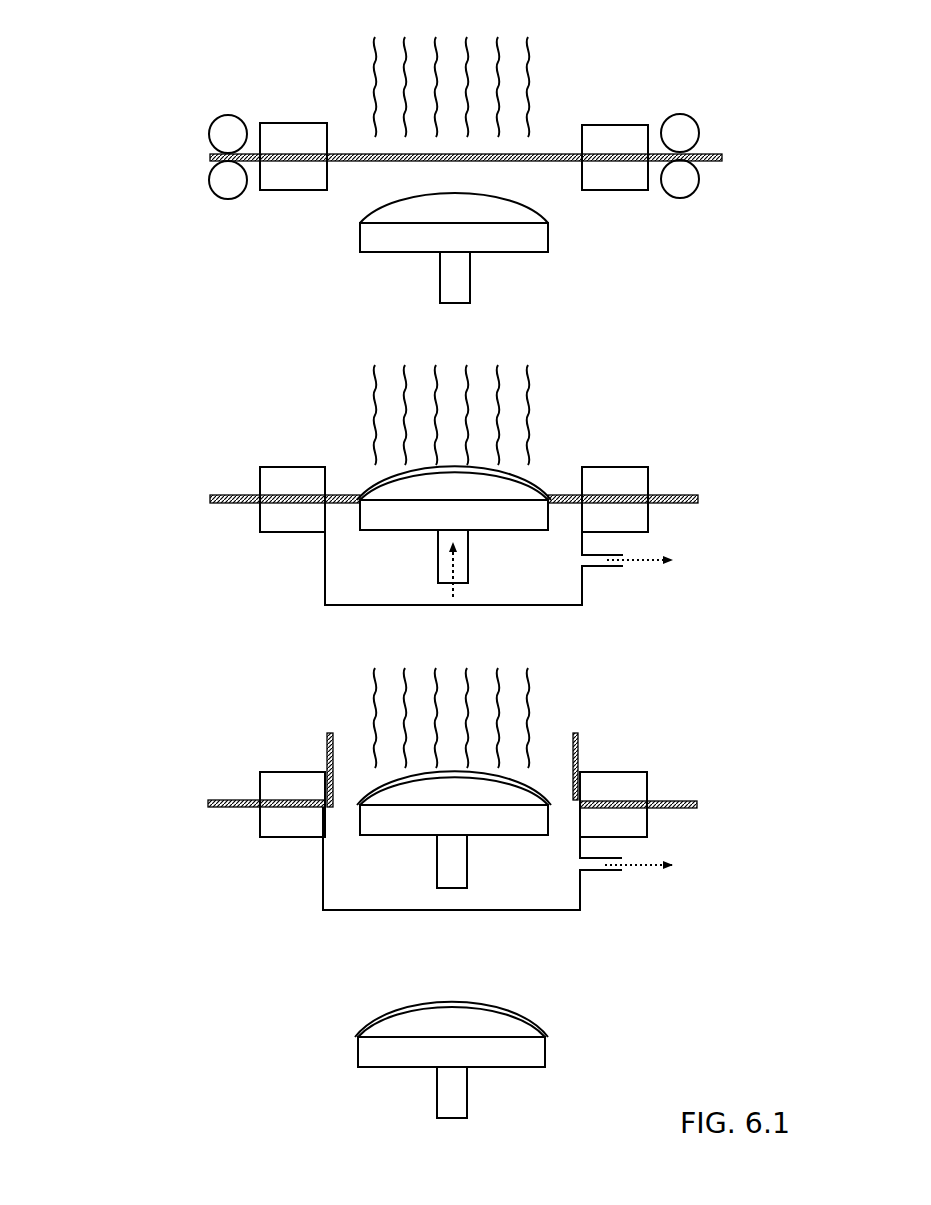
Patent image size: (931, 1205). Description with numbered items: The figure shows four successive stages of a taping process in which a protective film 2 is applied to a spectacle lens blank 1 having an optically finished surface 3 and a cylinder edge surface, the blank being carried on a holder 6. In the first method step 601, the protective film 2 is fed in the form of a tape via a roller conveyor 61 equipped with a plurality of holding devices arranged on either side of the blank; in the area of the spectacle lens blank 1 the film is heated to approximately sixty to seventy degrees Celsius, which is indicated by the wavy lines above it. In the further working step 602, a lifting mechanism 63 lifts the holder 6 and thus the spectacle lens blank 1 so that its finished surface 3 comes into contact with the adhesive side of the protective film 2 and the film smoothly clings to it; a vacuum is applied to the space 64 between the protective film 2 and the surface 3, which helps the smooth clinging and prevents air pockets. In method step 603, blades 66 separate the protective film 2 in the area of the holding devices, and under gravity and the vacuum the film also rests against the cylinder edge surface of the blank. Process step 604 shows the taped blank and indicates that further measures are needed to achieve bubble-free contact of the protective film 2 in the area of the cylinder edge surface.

The first method step 601 is at (167, 110).
The further working step 602 is at (167, 455).
The method step 603 is at (167, 757).
The process step 604 is at (315, 1030).
The spectacle lens blank 1 is at (472, 241).
The protective film 2 is at (722, 157).
The optically finished surface 3 is at (528, 212).
The holder 6 is at (470, 283).
The roller conveyor 61 is at (228, 127).
The lifting mechanism 63 is at (472, 562).
The space 64 is at (325, 578).
The blades 66 is at (326, 750).